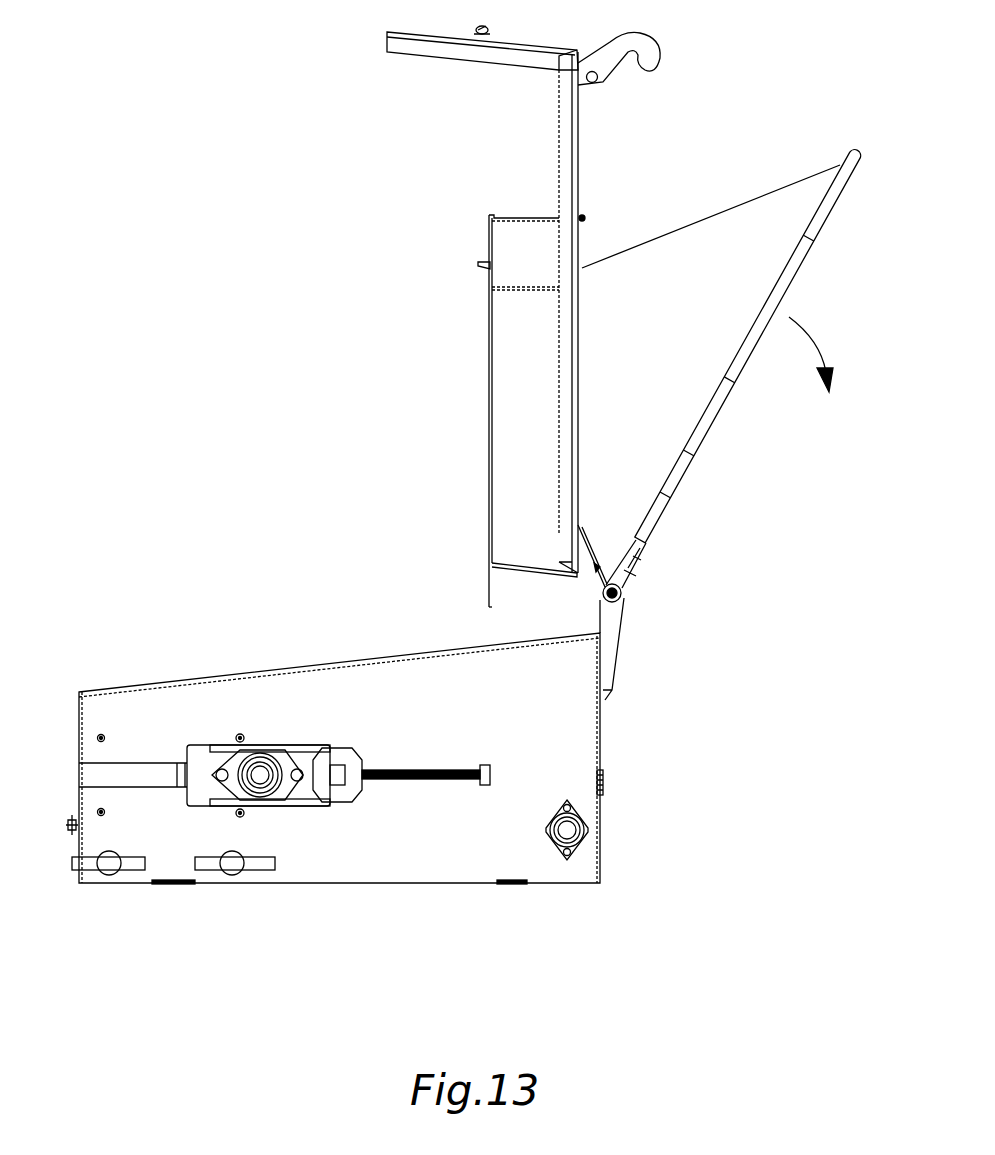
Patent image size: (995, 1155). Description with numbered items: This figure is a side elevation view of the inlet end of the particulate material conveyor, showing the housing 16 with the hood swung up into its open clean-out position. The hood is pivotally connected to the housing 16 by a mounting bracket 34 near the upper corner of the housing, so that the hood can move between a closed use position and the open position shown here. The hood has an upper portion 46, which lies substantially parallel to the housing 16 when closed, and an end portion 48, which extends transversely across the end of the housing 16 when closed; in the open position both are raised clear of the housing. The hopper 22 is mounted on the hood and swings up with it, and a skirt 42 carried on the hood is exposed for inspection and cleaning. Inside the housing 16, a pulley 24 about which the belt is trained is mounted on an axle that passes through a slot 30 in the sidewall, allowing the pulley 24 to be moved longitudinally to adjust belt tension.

The housing 16 is at (573, 752).
The hopper 22 is at (683, 432).
The pulley 24 is at (262, 770).
The slot 30 is at (103, 787).
The mounting bracket 34 is at (612, 620).
The skirt 42 is at (494, 397).
The upper portion 46 is at (580, 135).
The end portion 48 is at (520, 46).